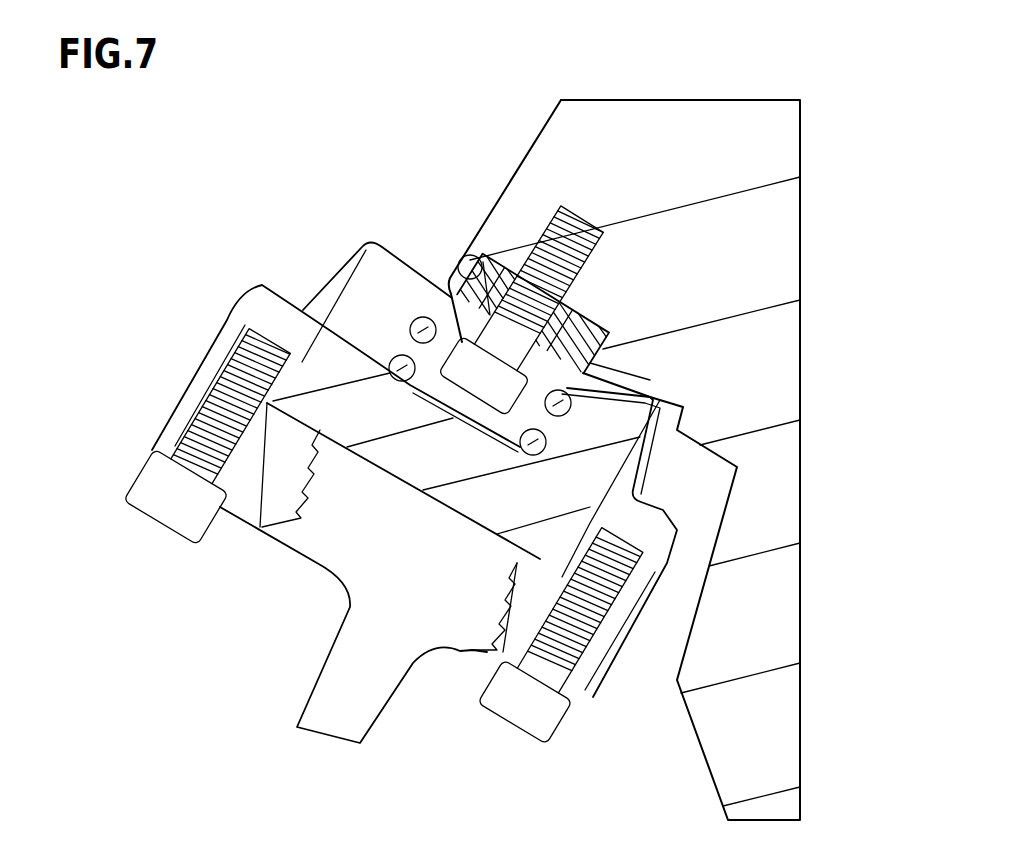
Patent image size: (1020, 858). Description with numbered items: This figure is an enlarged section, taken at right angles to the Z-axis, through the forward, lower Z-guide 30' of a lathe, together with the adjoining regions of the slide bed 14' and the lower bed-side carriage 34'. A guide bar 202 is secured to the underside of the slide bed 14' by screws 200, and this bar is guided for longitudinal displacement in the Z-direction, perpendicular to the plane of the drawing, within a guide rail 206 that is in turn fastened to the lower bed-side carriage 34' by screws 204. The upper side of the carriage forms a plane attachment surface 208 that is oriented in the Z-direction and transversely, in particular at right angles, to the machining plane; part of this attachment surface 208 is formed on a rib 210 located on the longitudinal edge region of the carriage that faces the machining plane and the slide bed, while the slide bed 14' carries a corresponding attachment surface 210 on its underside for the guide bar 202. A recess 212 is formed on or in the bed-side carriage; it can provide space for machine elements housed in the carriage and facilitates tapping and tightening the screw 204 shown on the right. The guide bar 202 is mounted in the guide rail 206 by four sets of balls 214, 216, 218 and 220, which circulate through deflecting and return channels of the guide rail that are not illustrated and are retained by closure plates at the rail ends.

The slide bed 14' is at (624, 438).
The Z-guide 30' is at (727, 348).
The lower bed-side carriage 34' is at (749, 619).
The screws 200 is at (537, 237).
The guide bar 202 is at (586, 332).
The screws 204 is at (160, 505).
The guide rail 206 is at (360, 307).
The attachment surface 208 is at (338, 433).
The attachment surface / rib 210 is at (464, 256).
The recess 212 is at (422, 639).
The balls 214 is at (567, 390).
The balls 216 is at (540, 453).
The balls 218 is at (440, 342).
The balls 220 is at (244, 305).